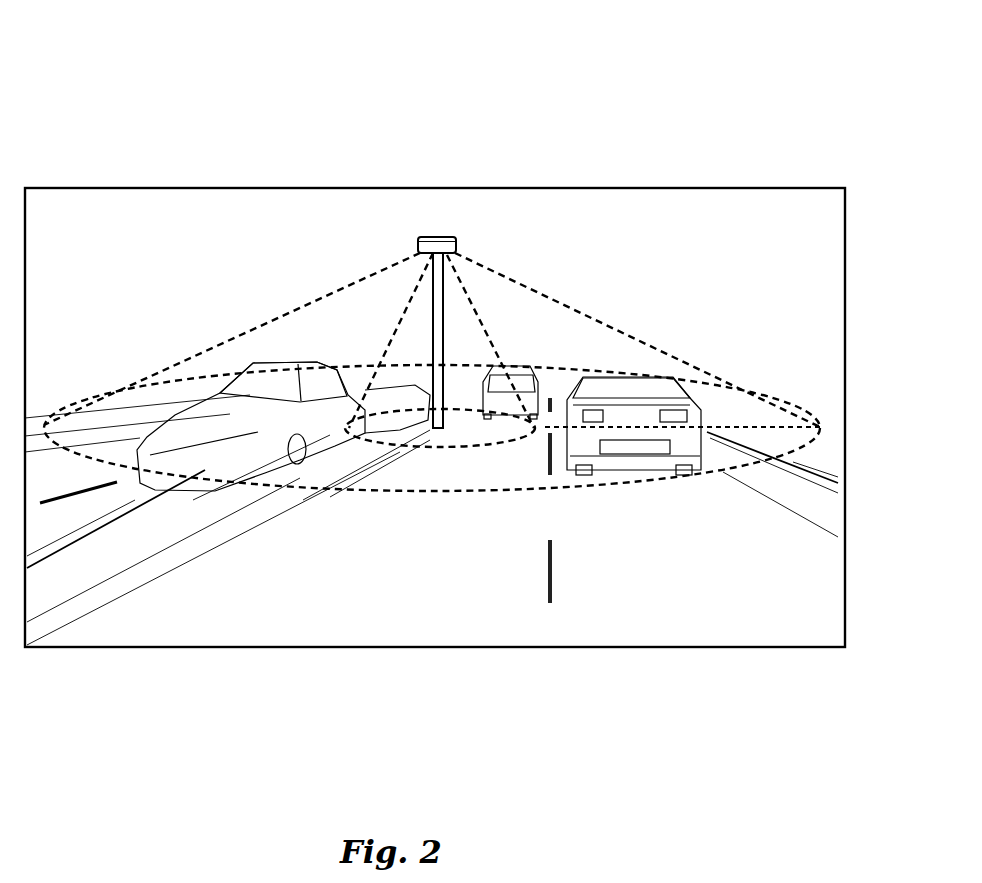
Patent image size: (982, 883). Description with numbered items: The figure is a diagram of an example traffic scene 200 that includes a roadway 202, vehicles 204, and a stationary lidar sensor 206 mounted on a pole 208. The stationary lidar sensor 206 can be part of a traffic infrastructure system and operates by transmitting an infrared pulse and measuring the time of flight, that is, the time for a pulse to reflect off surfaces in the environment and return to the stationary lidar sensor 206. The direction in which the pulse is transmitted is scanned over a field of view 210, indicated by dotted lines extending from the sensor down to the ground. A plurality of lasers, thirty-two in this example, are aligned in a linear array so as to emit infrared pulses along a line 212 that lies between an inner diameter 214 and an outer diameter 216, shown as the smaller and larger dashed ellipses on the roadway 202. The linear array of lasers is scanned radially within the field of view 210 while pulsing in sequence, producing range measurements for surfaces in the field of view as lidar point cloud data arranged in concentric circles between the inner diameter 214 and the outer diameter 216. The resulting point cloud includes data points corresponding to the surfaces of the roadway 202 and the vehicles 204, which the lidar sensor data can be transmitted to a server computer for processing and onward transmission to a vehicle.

The traffic scene 200 is at (498, 42).
The roadway 202 is at (247, 613).
The vehicles 204 is at (648, 240).
The stationary lidar sensor 206 is at (430, 236).
The pole 208 is at (432, 342).
The field of view 210 is at (213, 347).
The line 212 is at (546, 428).
The inner diameter 214 is at (400, 445).
The outer diameter 216 is at (367, 490).